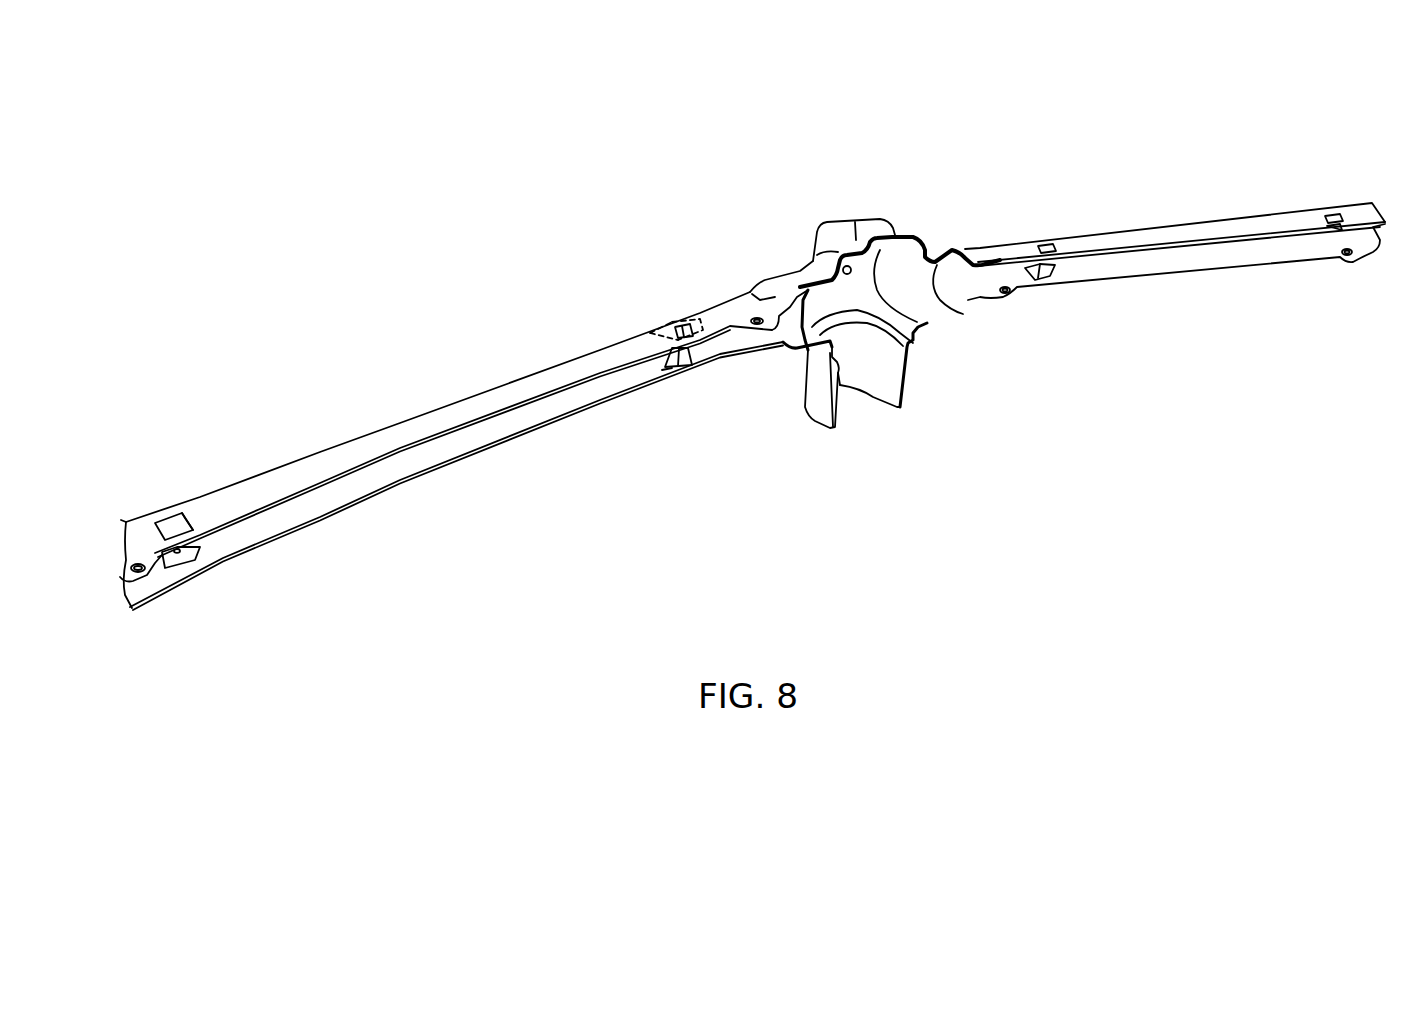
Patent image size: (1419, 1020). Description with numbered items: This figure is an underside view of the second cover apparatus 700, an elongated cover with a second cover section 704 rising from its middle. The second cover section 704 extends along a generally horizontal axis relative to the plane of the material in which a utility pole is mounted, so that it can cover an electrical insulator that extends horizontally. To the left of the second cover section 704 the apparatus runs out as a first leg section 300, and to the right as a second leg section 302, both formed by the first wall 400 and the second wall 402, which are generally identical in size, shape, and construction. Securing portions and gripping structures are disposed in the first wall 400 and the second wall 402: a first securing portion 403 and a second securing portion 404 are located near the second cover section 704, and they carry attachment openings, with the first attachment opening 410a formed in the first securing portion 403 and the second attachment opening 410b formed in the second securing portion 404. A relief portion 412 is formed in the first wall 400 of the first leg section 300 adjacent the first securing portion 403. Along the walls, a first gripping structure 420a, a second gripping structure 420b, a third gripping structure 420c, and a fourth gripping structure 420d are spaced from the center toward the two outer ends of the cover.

The second cover apparatus 700 is at (278, 356).
The first leg section 300 is at (510, 384).
The second side rail 302 is at (1135, 232).
The second cover section 704 is at (832, 228).
The first wall 400 is at (428, 443).
The second wall 402 is at (404, 486).
The first securing portion 403 is at (662, 327).
The second securing portion 404 is at (667, 373).
The first attachment opening 410a is at (677, 330).
The second attachment opening 410b is at (676, 372).
The relief portion 412 is at (700, 306).
The first gripping structure 420a is at (755, 346).
The second gripping structure 420b is at (1006, 300).
The third gripping structure 420c is at (150, 576).
The fourth gripping structure 420d is at (1347, 268).